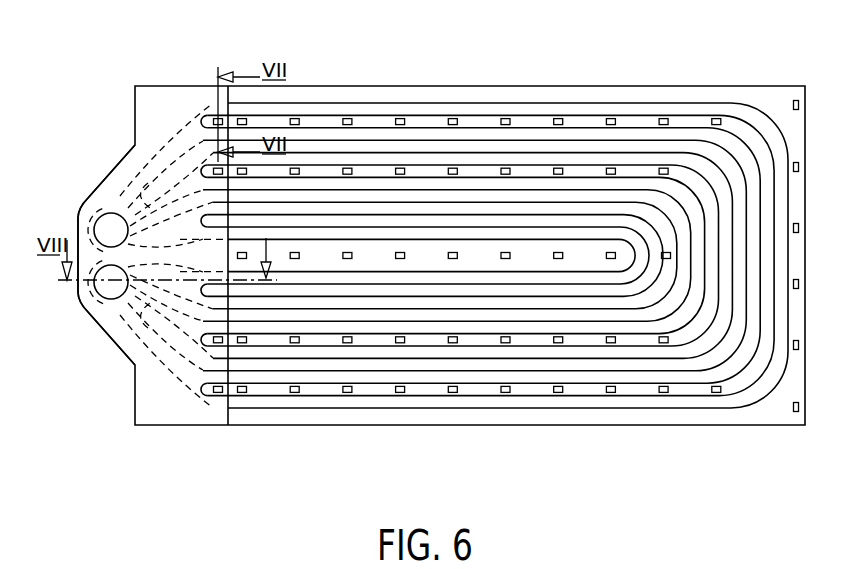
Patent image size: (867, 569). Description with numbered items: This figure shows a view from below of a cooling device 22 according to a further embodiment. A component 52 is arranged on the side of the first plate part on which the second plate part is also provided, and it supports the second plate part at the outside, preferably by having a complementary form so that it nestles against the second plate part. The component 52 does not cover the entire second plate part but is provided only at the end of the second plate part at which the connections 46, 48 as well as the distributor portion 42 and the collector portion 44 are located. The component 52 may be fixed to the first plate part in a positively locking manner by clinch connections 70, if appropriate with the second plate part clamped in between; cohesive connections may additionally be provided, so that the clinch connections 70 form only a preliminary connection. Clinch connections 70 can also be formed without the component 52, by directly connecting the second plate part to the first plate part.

The cooling device 22 is at (602, 427).
The distributor portion 42 is at (135, 305).
The collector portion 44 is at (135, 218).
The connection 46 is at (110, 288).
The connection 48 is at (110, 228).
The component 52 is at (163, 405).
The clinch connections 70 is at (216, 118).